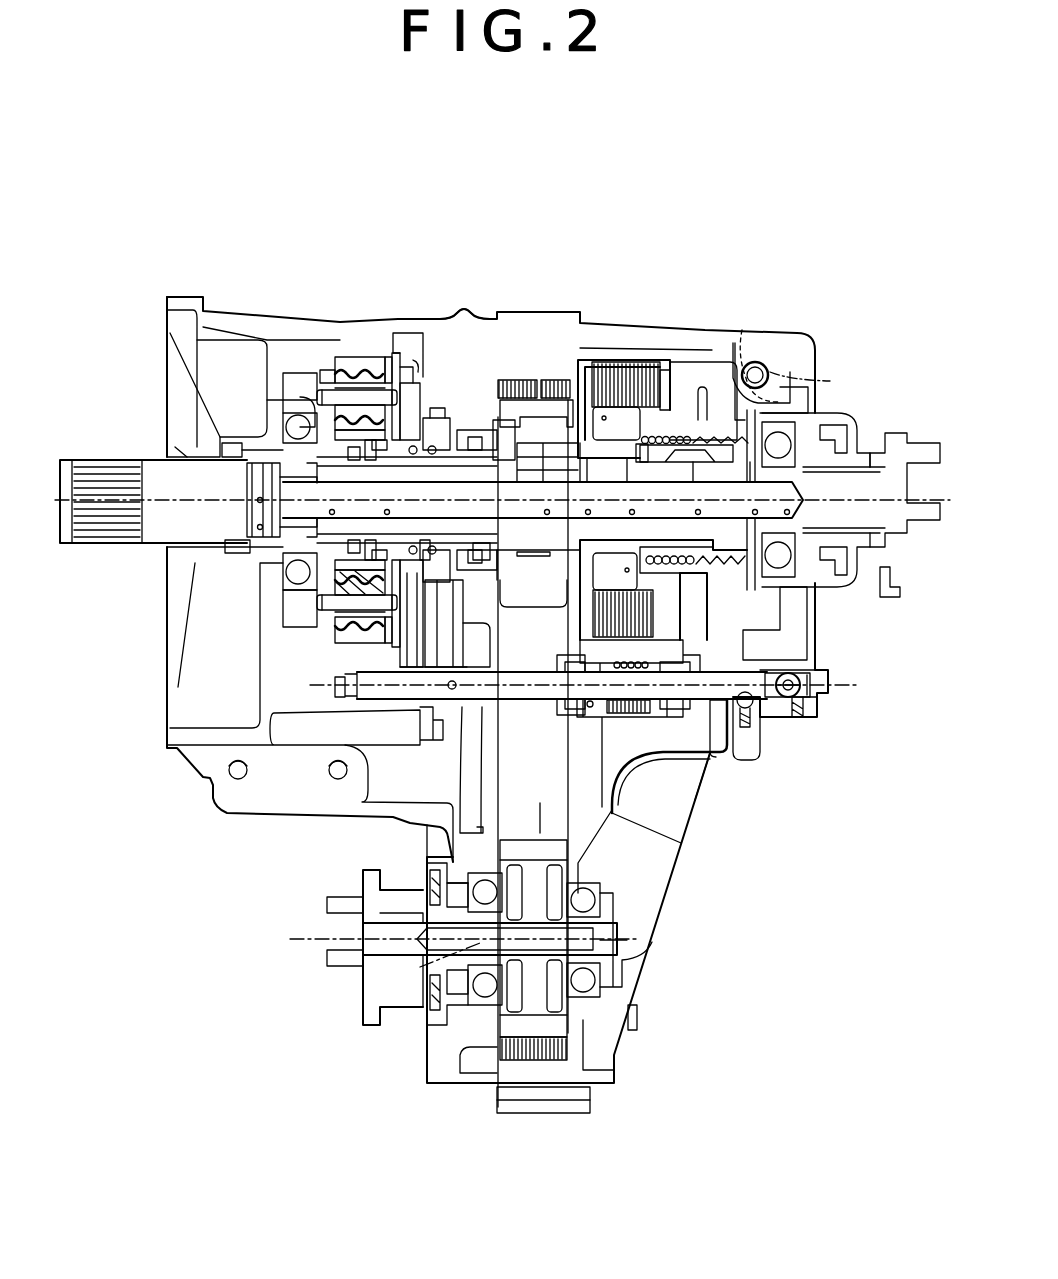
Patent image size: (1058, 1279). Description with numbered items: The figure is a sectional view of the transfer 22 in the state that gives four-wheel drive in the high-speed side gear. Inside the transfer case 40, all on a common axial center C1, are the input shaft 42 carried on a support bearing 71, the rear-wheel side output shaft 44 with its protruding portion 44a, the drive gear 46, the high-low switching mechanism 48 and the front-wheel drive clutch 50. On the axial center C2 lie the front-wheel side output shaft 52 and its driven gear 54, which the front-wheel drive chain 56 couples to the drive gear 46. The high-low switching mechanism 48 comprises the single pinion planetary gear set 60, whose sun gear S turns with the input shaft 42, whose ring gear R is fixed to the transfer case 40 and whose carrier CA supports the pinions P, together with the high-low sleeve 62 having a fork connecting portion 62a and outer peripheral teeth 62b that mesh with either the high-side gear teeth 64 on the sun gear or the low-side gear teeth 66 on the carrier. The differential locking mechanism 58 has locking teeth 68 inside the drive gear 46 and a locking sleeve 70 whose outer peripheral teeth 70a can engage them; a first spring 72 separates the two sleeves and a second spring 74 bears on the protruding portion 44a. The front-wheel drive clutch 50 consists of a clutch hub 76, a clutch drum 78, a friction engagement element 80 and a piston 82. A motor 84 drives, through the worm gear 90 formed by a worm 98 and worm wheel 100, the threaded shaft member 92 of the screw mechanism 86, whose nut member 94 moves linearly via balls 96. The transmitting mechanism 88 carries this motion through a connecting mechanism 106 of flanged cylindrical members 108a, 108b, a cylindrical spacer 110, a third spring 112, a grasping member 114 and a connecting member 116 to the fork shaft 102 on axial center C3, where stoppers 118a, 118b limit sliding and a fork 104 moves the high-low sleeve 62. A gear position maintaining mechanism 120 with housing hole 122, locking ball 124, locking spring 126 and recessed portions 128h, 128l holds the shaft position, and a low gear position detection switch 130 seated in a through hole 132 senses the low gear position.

The transfer 22 is at (728, 230).
The transfer case 40 is at (292, 330).
The input shaft 42 is at (153, 460).
The rear-wheel side output shaft 44 is at (883, 493).
The protruding portion 44a is at (513, 455).
The drive gear 46 is at (500, 395).
The high-low switching mechanism 48 is at (415, 332).
The front-wheel drive clutch 50 is at (665, 391).
The front-wheel side output shaft 52 is at (463, 883).
The driven gear 54 is at (493, 862).
The front-wheel drive chain 56 is at (428, 963).
The differential locking mechanism 58 is at (481, 388).
The single pinion planetary gear set 60 is at (383, 473).
The high-low sleeve 62 is at (428, 380).
The fork connecting portion 62a is at (437, 420).
The outer peripheral teeth 62b is at (372, 460).
The high-side gear teeth 64 is at (358, 460).
The low-side gear teeth 66 is at (398, 442).
The locking teeth 68 is at (497, 417).
The locking sleeve 70 is at (468, 450).
The outer peripheral teeth 70a is at (490, 428).
The support bearing 71 is at (290, 438).
The first spring 72 is at (422, 543).
The second spring 74 is at (483, 550).
The clutch hub 76 is at (630, 413).
The clutch drum 78 is at (638, 380).
The friction engagement element 80 is at (680, 365).
The piston 82 is at (672, 392).
The motor 84 is at (748, 345).
The screw mechanism 86 is at (724, 377).
The transmitting mechanism 88 is at (715, 757).
The worm gear 90 is at (719, 511).
The threaded shaft member 92 is at (725, 447).
The nut member 94 is at (710, 420).
The balls 96 is at (642, 462).
The worm 98 is at (814, 381).
The worm wheel 100 is at (800, 425).
The fork shaft 102 is at (510, 682).
The fork 104 is at (437, 620).
The connecting mechanism 106 is at (667, 590).
The flanged cylindrical member 108a is at (582, 707).
The flanged cylindrical member 108b is at (625, 713).
The cylindrical spacer 110 is at (600, 673).
The third spring 112 is at (612, 720).
The grasping member 114 is at (595, 640).
The connecting member 116 is at (687, 625).
The stopper 118a is at (573, 700).
The stopper 118b is at (672, 660).
The gear position maintaining mechanism 120 is at (743, 743).
The housing hole 122 is at (750, 715).
The locking ball 124 is at (722, 722).
The locking spring 126 is at (742, 752).
The recessed portion 128h is at (744, 692).
The recessed portion 128l is at (725, 722).
The low gear position detection switch 130 is at (800, 730).
The through hole 132 is at (800, 710).
The ring gear R is at (355, 358).
The pinions P is at (348, 365).
The sun gear S is at (335, 423).
The carrier CA is at (413, 355).
The axial center C1 is at (943, 505).
The axial center C2 is at (347, 935).
The axial center C3 is at (828, 685).